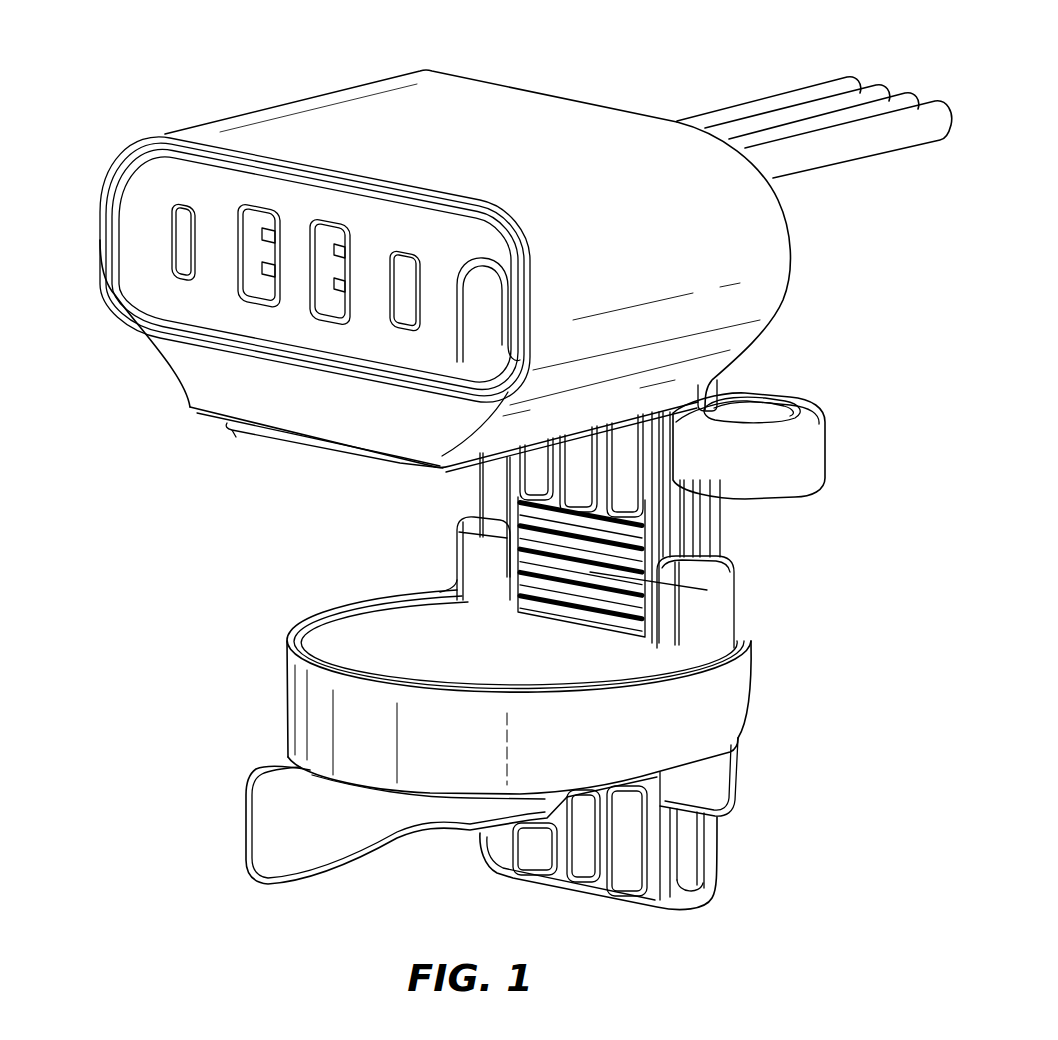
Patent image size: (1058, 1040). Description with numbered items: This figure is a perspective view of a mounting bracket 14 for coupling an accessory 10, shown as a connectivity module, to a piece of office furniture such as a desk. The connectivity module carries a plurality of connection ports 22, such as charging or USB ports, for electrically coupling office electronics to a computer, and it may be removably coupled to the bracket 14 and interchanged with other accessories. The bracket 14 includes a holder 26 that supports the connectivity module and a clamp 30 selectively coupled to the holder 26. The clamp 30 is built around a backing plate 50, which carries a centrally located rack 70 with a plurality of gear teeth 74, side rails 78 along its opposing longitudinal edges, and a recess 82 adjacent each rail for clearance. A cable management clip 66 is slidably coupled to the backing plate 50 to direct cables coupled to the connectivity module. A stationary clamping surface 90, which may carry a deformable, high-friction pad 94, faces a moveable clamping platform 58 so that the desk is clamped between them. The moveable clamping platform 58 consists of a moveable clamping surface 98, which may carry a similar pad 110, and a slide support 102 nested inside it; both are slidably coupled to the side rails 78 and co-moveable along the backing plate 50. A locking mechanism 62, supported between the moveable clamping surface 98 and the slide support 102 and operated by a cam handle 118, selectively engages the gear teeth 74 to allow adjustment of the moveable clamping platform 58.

The accessory 10 is at (150, 198).
The mounting bracket 14 is at (113, 572).
The connection ports 22 is at (172, 262).
The holder 26 is at (333, 128).
The clamp 30 is at (295, 567).
The backing plate 50 is at (665, 502).
The moveable clamping platform 58 is at (769, 704).
The locking mechanism 62 is at (447, 866).
The cable management clip 66 is at (820, 436).
The rack 70 is at (722, 588).
The gear teeth 74 is at (550, 517).
The side rails 78 is at (714, 533).
The recess 82 is at (689, 869).
The stationary clamping surface 90 is at (312, 458).
The pad 94 is at (257, 433).
The moveable clamping surface 98 is at (287, 698).
The slide support 102 is at (715, 798).
The pad 110 is at (397, 610).
The cam handle 118 is at (288, 818).